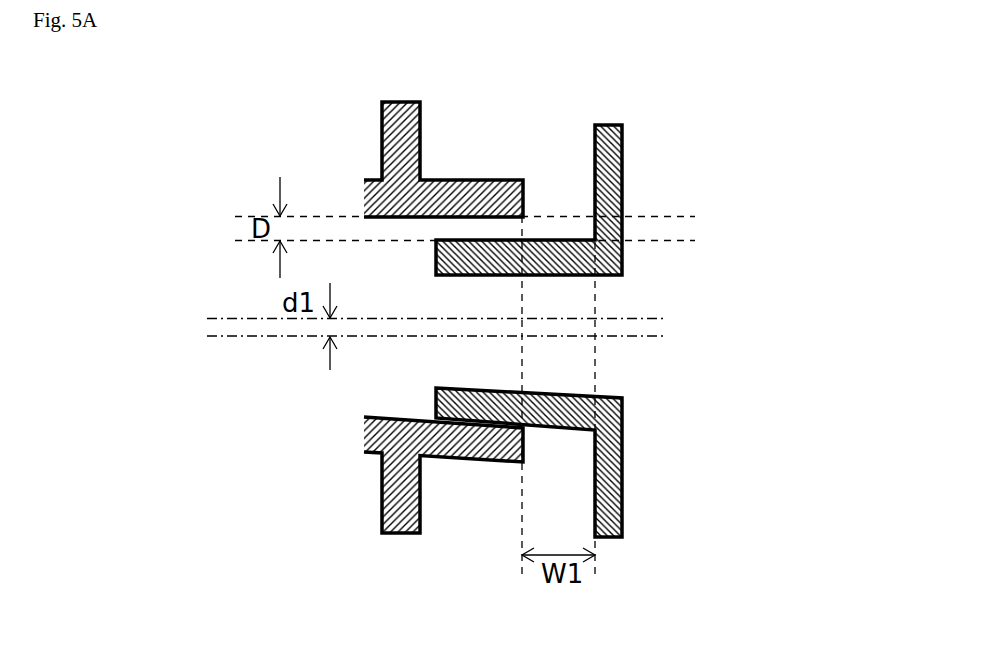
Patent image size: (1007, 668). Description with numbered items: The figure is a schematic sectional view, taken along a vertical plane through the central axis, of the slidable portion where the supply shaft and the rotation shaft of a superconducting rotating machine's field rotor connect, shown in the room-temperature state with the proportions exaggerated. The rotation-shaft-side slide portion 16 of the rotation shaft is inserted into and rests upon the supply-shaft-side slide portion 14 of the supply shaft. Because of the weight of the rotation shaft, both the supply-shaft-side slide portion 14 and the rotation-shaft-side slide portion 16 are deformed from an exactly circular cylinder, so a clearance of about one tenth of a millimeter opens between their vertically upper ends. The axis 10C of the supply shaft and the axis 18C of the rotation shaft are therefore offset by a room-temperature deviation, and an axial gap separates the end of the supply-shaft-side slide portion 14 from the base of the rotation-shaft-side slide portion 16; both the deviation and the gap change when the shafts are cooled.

The supply-shaft-side slide portion 14 is at (445, 178).
The rotation-shaft-side slide portion 16 is at (547, 240).
The axis of the supply shaft 10C is at (238, 318).
The axis of the rotation shaft 18C is at (632, 336).